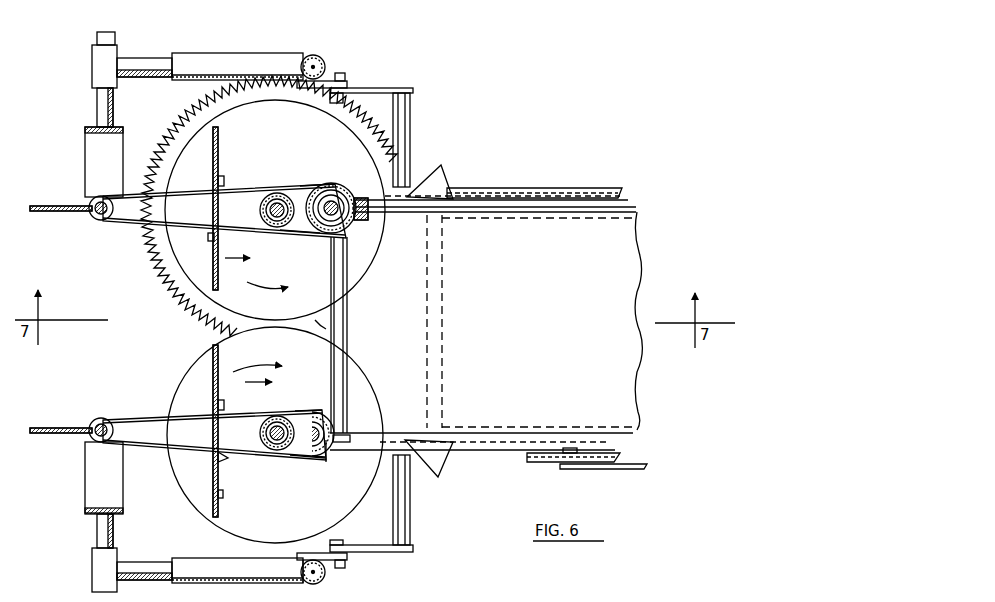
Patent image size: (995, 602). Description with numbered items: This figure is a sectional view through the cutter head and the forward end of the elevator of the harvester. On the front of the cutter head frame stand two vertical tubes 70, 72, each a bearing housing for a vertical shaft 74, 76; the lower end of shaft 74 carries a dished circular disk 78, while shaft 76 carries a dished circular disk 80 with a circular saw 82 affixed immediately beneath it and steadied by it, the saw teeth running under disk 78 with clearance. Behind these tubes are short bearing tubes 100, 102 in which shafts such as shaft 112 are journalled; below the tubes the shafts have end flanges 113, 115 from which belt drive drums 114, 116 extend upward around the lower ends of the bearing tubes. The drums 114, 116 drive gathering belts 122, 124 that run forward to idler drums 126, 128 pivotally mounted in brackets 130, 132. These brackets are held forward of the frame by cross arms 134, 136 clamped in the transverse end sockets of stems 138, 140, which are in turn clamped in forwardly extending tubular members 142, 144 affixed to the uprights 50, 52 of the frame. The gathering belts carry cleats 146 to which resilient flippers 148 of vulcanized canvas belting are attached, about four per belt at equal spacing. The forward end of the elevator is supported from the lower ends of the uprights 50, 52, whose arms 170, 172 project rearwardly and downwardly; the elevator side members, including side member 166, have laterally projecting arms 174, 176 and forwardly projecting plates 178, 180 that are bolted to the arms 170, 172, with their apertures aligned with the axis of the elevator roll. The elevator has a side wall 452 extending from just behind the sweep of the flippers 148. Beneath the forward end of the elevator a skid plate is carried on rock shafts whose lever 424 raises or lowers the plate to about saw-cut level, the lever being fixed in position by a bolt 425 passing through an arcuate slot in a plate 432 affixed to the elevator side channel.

The upright 50 is at (326, 582).
The upright 52 is at (320, 61).
The vertical tube 70 is at (289, 421).
The vertical tube 72 is at (282, 192).
The vertical shaft 74 is at (265, 420).
The vertical shaft 76 is at (268, 193).
The dished circular disk 78 is at (187, 471).
The dished circular disk 80 is at (192, 165).
The circular saw 82 is at (172, 133).
The short bearing tube 100 is at (316, 464).
The short bearing tube 102 is at (355, 196).
The shaft 112 is at (360, 200).
The end flange 113 is at (306, 452).
The belt drive drum 114 is at (315, 408).
The end flange 115 is at (312, 186).
The belt drive drum 116 is at (300, 236).
The gathering belt 122 is at (150, 415).
The gathering belt 124 is at (133, 222).
The idler drum 126 is at (93, 441).
The idler drum 128 is at (90, 218).
The bracket 130 is at (93, 486).
The bracket 132 is at (96, 150).
The cross arm 134 is at (95, 592).
The cross arm 136 is at (112, 33).
The stem 138 is at (143, 581).
The stem 140 is at (137, 60).
The tubular member 142 is at (205, 578).
The tubular member 144 is at (191, 60).
The cleat 146 is at (224, 459).
The flipper 148 is at (221, 496).
The elevator side member 166 is at (600, 197).
The arm 170 is at (343, 561).
The arm 172 is at (340, 80).
The laterally projecting arm 174 is at (412, 506).
The laterally projecting arm 176 is at (411, 126).
The forwardly projecting plate 178 is at (372, 545).
The forwardly projecting plate 180 is at (393, 89).
The lever 424 is at (624, 470).
The bolt 425 is at (568, 465).
The plate 432 is at (586, 462).
The side wall 452 is at (442, 181).